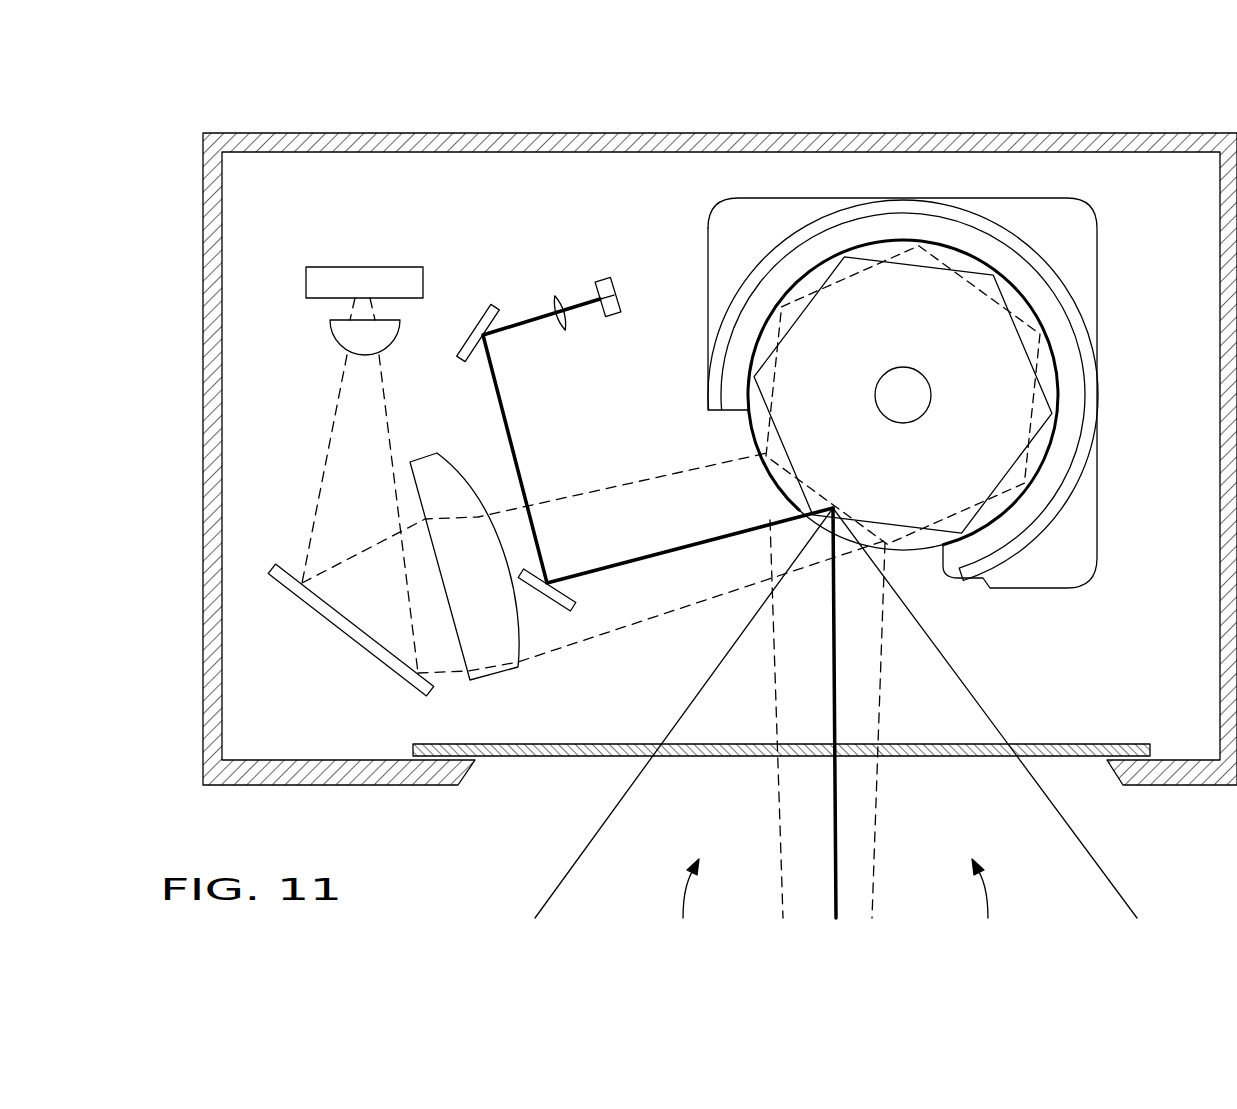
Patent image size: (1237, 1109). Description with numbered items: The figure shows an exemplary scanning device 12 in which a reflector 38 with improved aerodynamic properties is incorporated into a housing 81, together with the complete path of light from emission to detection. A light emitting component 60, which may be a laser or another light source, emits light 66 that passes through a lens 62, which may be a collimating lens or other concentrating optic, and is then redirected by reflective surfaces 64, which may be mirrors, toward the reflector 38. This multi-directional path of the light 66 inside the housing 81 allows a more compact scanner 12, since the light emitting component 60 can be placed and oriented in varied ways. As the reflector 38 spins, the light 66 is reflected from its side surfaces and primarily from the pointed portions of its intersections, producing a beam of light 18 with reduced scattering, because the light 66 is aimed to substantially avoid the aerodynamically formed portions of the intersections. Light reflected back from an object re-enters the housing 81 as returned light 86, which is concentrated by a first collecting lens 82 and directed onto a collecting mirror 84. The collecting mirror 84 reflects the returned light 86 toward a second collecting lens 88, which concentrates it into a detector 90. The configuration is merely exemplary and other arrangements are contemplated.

The scanning device 12 is at (1148, 208).
The beam of light 18 is at (835, 906).
The reflector 38 is at (865, 292).
The light emitting component 60 is at (620, 296).
The lens 62 is at (556, 308).
The reflective surfaces 64 is at (478, 325).
The light 66 is at (527, 335).
The housing 81 is at (385, 776).
The first collecting lens 82 is at (498, 670).
The collecting mirror 84 is at (362, 652).
The returned light 86 is at (328, 433).
The second collecting lens 88 is at (333, 330).
The detector 90 is at (333, 267).